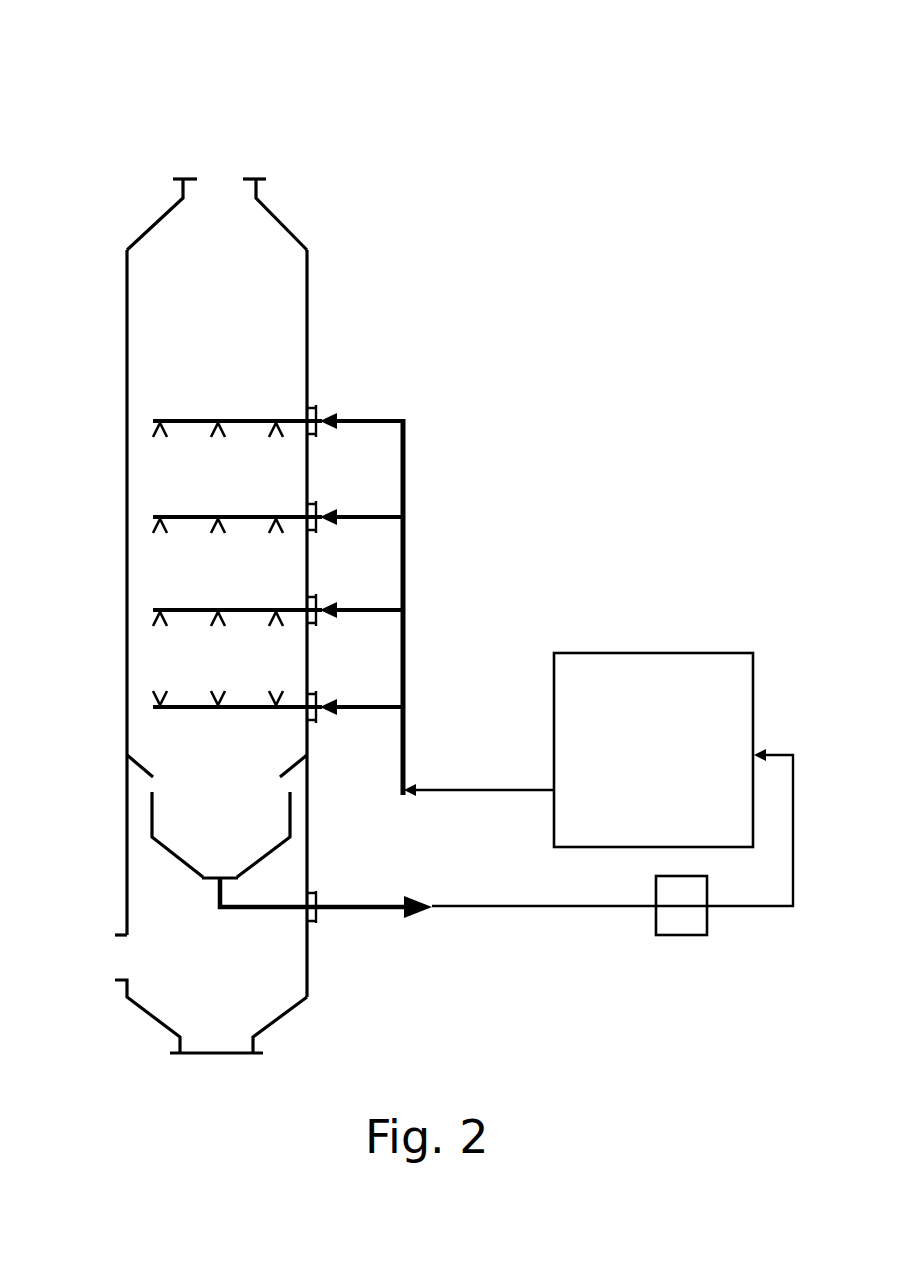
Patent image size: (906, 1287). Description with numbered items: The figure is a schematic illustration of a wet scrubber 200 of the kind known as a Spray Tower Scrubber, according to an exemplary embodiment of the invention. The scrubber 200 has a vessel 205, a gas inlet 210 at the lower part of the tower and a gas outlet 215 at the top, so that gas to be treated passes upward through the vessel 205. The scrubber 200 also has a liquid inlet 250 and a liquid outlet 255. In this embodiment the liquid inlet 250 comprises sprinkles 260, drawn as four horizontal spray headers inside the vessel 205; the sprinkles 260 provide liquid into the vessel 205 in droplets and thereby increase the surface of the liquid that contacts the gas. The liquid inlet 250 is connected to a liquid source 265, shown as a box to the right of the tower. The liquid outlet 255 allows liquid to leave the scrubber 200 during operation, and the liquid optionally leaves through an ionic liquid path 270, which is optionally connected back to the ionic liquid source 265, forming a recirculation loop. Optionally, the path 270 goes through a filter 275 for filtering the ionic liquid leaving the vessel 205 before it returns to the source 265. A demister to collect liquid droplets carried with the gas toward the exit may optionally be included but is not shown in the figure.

The wet scrubber 200 is at (95, 110).
The vessel 205 is at (127, 367).
The gas inlet 210 is at (117, 955).
The gas outlet 215 is at (215, 178).
The liquid inlet 250 is at (404, 575).
The liquid outlet 255 is at (367, 910).
The sprinkles 260 is at (155, 518).
The liquid source 265 is at (578, 750).
The ionic liquid path 270 is at (632, 907).
The filter 275 is at (707, 920).